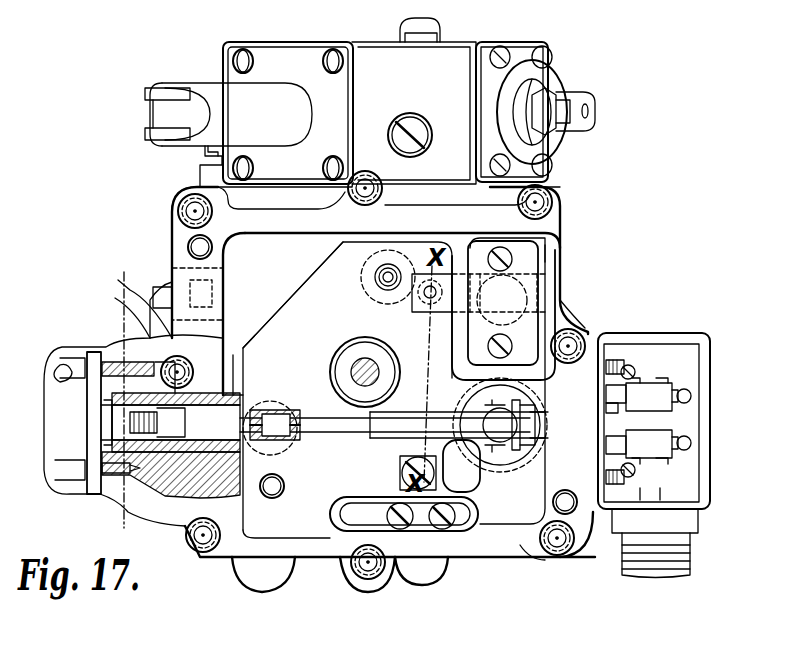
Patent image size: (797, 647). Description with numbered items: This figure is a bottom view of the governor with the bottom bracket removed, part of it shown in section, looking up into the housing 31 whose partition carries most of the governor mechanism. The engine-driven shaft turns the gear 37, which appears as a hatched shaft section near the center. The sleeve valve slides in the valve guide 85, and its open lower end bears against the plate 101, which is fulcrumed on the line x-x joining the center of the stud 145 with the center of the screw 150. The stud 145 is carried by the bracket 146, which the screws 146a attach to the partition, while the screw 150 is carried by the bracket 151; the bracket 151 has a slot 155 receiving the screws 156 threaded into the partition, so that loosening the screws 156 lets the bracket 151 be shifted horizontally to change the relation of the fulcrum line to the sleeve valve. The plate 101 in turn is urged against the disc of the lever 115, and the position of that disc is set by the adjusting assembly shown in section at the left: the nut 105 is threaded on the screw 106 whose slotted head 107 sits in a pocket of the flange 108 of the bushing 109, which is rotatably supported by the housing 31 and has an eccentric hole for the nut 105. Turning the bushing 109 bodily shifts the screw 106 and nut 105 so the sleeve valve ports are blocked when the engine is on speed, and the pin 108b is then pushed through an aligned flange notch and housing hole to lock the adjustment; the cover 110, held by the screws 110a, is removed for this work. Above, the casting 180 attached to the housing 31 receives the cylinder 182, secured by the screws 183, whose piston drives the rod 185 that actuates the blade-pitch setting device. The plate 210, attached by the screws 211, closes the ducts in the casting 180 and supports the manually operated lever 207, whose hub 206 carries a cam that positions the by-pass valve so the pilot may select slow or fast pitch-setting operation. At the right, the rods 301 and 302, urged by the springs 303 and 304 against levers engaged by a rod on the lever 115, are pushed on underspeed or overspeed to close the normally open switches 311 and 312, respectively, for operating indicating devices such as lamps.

The housing 31 is at (182, 243).
The gear 37 is at (366, 356).
The valve guide 85 is at (282, 404).
The plate 101 is at (311, 284).
The nut 105 is at (231, 392).
The screw 106 is at (132, 421).
The slotted head 107 is at (108, 432).
The flange 108 is at (118, 362).
The pin 108b is at (133, 474).
The bushing 109 is at (208, 385).
The cover 110 is at (110, 492).
The screws 110a is at (98, 480).
The lever 115 is at (322, 425).
The stud 145 is at (430, 299).
The bracket 146 is at (528, 262).
The screws 146a is at (512, 263).
The screw 150 is at (400, 480).
The bracket 151 is at (345, 508).
The slot 155 is at (343, 514).
The screws 156 is at (456, 516).
The casting 180 is at (370, 48).
The cylinder 182 is at (300, 52).
The screws 183 is at (244, 56).
The rod 185 is at (200, 90).
The hub 206 is at (540, 72).
The lever 207 is at (590, 98).
The plate 210 is at (520, 46).
The screws 211 is at (498, 48).
The rod 301 is at (612, 462).
The rod 302 is at (608, 410).
The spring 303 is at (610, 447).
The spring 304 is at (612, 400).
The switch 311 is at (668, 452).
The switch 312 is at (668, 408).